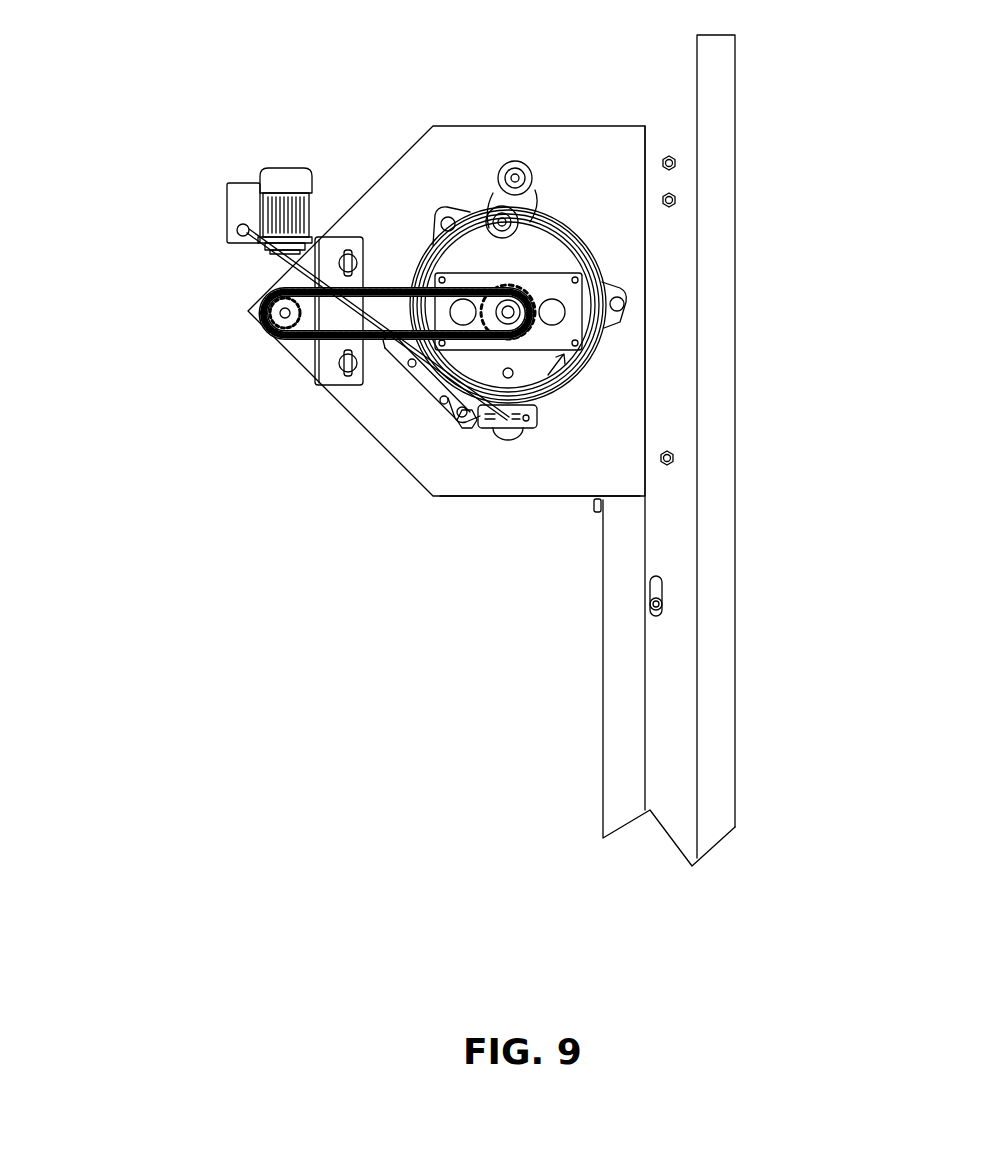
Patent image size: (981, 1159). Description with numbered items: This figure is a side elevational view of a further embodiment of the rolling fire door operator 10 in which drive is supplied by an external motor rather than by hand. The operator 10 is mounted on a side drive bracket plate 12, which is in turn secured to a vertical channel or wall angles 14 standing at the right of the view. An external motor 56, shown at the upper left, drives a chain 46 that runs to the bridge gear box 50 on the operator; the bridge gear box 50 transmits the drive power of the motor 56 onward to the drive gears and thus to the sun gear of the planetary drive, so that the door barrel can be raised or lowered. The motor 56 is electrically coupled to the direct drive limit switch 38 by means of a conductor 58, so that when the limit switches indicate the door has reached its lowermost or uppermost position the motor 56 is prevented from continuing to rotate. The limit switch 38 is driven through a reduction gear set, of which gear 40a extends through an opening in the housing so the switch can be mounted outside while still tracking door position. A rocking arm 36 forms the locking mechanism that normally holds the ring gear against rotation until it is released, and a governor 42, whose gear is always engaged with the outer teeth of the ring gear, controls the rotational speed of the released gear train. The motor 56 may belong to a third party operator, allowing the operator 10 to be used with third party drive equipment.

The operator 10 is at (643, 262).
The side drive bracket plate 12 is at (458, 128).
The vertical channel or wall angles 14 is at (725, 107).
The rocking arm 36 is at (420, 413).
The direct drive limit switch 38 is at (496, 463).
The gear 40a is at (518, 444).
The governor 42 is at (545, 157).
The chain 46 is at (330, 338).
The bridge gear box 50 is at (592, 390).
The external motor 56 is at (306, 156).
The conductor 58 is at (310, 256).